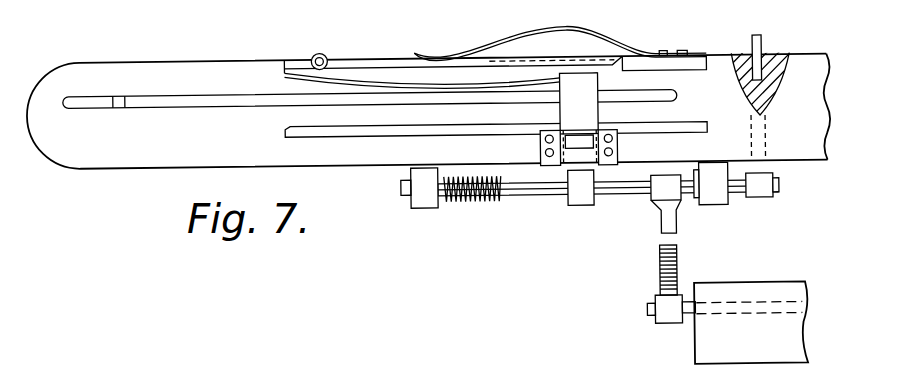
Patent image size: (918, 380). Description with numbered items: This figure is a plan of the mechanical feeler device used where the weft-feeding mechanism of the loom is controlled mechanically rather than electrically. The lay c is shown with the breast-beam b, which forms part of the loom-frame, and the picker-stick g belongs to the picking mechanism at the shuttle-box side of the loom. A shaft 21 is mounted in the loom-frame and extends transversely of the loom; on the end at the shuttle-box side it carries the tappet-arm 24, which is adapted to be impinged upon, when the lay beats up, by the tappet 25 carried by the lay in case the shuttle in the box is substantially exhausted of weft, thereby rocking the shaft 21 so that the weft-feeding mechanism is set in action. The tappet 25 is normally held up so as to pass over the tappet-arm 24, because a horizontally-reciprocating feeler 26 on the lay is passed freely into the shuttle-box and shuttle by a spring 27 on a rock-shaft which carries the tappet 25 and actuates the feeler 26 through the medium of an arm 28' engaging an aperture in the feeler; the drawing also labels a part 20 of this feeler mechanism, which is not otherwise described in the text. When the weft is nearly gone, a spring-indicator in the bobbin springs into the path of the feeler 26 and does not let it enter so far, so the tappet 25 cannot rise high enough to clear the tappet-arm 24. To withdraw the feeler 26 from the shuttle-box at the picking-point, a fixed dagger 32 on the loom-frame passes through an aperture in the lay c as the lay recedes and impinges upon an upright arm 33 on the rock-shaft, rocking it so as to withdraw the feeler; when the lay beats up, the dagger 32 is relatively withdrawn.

The lay c is at (177, 58).
The picker-stick g is at (118, 105).
The breast-beam b is at (285, 130).
The rod 20 is at (541, 197).
The shaft 21 is at (645, 312).
The tappet-arm 24 is at (677, 272).
The tappet 25 is at (670, 220).
The feeler 26 is at (560, 106).
The spring 27 is at (482, 202).
The arm 28' is at (557, 168).
The fixed dagger 32 is at (762, 50).
The upright arm 33 is at (778, 183).